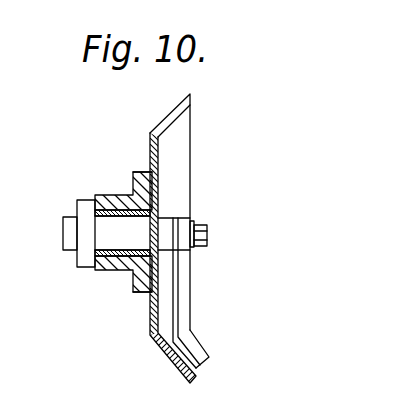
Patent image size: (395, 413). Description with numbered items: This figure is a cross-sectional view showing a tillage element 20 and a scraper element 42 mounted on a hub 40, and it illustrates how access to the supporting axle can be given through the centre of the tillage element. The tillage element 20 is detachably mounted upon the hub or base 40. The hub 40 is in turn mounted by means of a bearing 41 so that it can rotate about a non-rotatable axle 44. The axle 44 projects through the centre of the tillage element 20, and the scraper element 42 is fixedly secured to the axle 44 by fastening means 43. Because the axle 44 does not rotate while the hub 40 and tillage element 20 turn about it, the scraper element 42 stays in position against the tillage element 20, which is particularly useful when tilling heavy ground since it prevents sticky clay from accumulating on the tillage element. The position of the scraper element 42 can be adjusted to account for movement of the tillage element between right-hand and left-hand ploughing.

The tillage element 20 is at (158, 144).
The hub 40 is at (108, 195).
The bearing 41 is at (150, 203).
The scraper element 42 is at (184, 318).
The fastening means 43 is at (207, 234).
The axle 44 is at (108, 232).